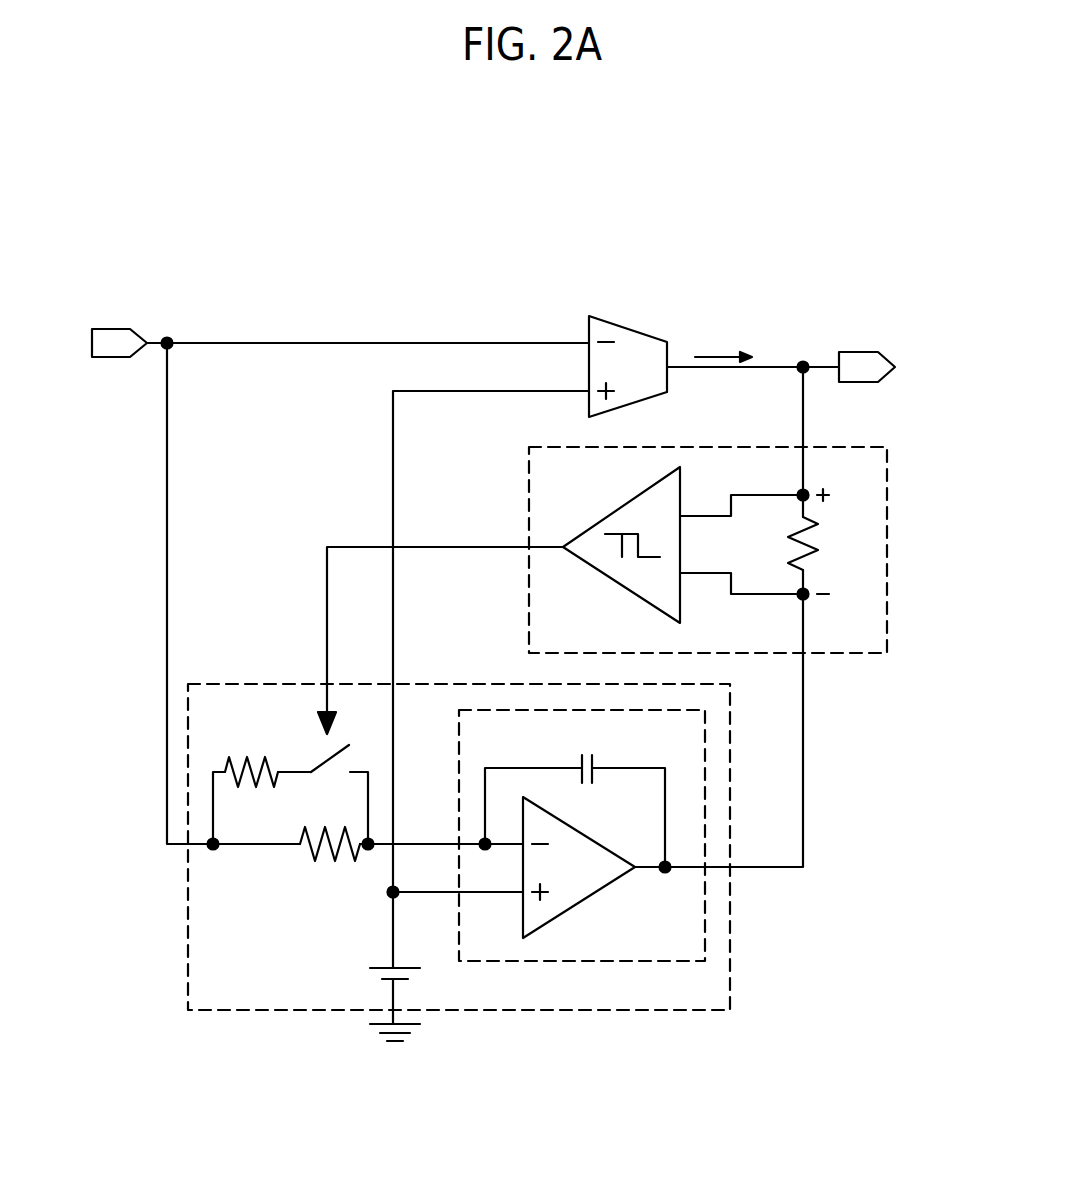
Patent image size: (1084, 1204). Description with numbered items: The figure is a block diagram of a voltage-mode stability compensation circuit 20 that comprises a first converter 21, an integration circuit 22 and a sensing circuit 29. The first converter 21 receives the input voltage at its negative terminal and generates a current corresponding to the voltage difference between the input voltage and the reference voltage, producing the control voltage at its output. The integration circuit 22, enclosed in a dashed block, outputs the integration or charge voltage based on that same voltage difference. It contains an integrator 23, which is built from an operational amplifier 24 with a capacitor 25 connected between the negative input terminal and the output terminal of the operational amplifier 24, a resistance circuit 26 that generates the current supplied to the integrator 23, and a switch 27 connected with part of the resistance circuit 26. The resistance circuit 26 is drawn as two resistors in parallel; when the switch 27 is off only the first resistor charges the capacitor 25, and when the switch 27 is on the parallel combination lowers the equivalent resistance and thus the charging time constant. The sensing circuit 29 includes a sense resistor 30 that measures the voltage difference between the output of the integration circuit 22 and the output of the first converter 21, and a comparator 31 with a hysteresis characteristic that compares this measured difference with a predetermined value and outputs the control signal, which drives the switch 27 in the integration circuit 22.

The stability compensation circuit 20 is at (794, 214).
The first converter 21 is at (629, 329).
The integration circuit 22 is at (730, 953).
The integrator 23 is at (459, 752).
The operational amplifier 24 is at (597, 897).
The capacitor 25 is at (584, 785).
The resistance circuit 26 is at (318, 832).
The switch 27 is at (335, 760).
The sensing circuit 29 is at (887, 530).
The sense resistor 30 is at (792, 532).
The comparator 31 is at (603, 518).